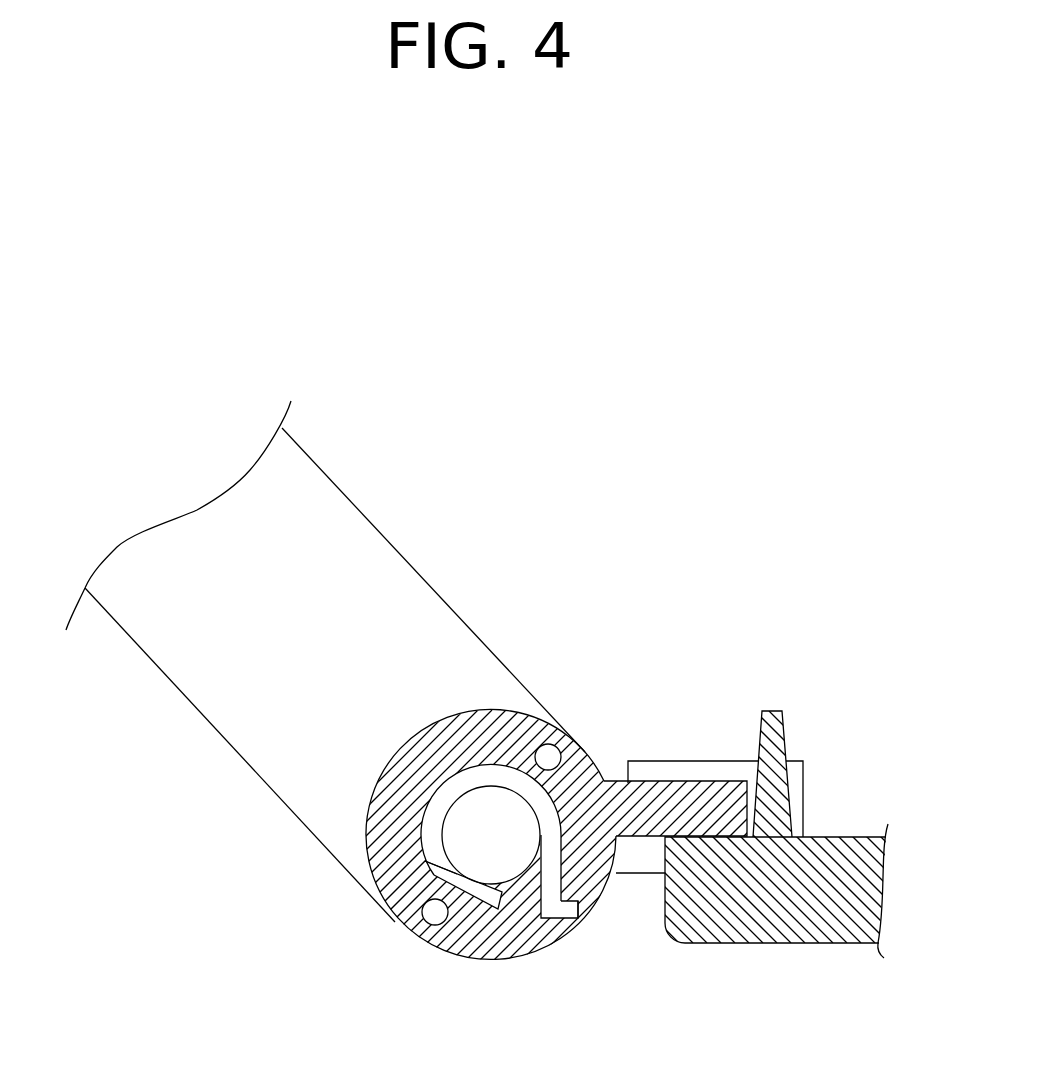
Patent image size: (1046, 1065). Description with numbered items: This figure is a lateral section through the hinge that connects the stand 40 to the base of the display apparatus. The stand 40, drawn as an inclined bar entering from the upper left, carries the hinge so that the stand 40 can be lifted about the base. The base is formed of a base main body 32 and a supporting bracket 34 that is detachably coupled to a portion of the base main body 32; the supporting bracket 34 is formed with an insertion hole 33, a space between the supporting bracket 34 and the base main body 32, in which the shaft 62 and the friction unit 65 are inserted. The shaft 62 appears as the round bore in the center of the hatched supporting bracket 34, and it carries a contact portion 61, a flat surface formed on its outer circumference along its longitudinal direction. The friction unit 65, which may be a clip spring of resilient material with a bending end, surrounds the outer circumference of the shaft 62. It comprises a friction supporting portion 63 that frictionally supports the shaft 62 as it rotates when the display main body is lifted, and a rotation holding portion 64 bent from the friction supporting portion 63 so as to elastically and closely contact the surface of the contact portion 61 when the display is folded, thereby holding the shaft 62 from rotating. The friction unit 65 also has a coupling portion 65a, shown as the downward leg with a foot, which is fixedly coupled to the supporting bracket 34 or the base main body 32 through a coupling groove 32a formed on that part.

The base main body 32 is at (788, 948).
The coupling groove 32a is at (585, 905).
The insertion hole 33 is at (510, 892).
The supporting bracket 34 is at (423, 713).
The stand 40 is at (427, 572).
The contact portion 61 is at (404, 872).
The shaft 62 is at (518, 882).
The friction supporting portion 63 is at (440, 830).
The rotation holding portion 64 is at (422, 908).
The friction unit 65 is at (557, 792).
The coupling portion 65a is at (553, 908).